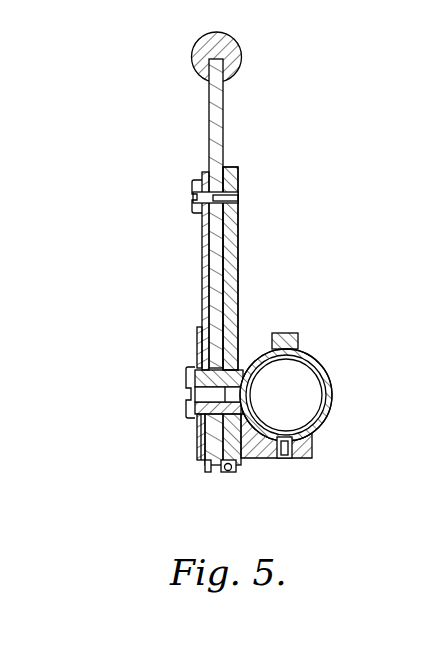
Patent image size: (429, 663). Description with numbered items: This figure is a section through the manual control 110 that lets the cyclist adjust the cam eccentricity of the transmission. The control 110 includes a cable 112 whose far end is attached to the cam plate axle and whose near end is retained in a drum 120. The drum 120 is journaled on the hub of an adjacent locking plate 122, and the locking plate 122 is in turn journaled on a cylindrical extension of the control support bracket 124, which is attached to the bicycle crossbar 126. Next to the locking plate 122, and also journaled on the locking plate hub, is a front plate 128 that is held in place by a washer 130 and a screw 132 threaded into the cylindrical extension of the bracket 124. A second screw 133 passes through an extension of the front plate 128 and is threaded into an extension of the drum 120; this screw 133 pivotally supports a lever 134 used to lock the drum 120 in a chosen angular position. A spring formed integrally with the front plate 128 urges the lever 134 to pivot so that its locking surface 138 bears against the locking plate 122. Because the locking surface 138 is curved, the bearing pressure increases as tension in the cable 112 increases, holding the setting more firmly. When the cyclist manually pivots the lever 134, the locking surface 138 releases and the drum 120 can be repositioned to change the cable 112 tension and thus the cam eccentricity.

The manual control 110 is at (129, 208).
The cable 112 is at (236, 470).
The drum 120 is at (228, 473).
The locking plate 122 is at (208, 470).
The control support bracket 124 is at (260, 460).
The bicycle crossbar 126 is at (330, 372).
The front plate 128 is at (202, 264).
The washer 130 is at (197, 335).
The screw 132 is at (186, 376).
The second screw 133 is at (193, 192).
The lever 134 is at (225, 121).
The locking surface 138 is at (238, 273).